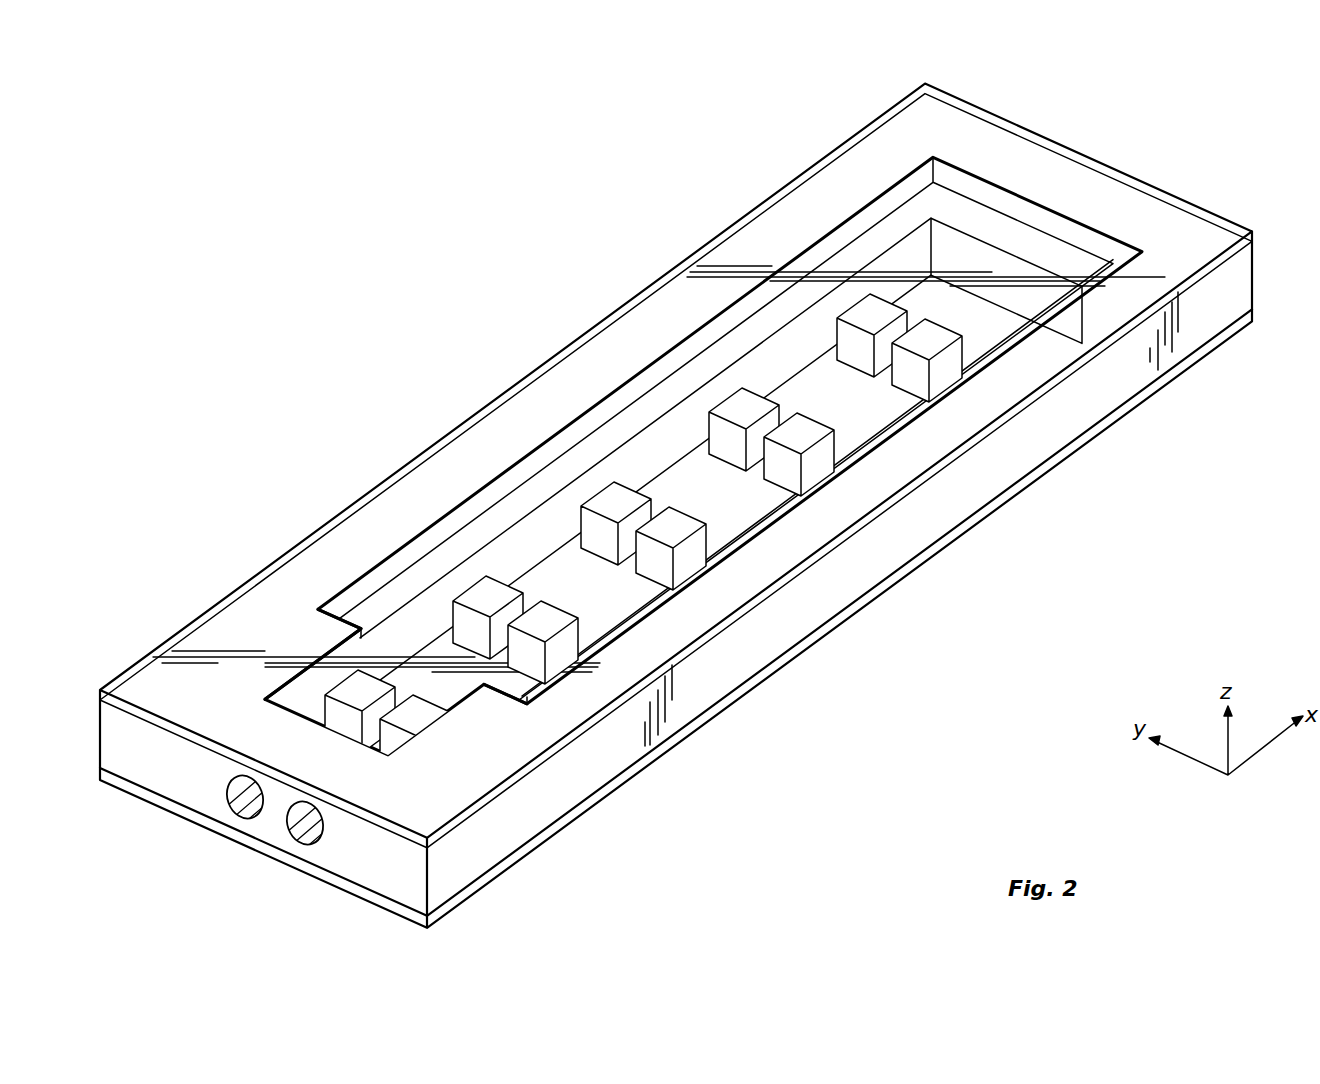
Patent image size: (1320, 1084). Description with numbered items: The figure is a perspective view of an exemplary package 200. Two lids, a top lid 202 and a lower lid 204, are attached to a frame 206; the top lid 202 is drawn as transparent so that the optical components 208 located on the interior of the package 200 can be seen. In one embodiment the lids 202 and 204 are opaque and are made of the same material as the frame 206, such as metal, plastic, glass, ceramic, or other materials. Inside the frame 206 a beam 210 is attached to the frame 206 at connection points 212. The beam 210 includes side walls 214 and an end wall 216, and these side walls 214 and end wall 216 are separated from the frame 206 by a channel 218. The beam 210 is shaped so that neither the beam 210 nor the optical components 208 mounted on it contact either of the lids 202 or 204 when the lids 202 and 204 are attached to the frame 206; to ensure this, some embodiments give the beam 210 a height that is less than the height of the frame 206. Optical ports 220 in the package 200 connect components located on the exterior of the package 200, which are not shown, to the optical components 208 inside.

The package 200 is at (343, 313).
The top lid 202 is at (222, 652).
The lid 204 is at (535, 845).
The frame 206 is at (1100, 187).
The optical components 208 is at (555, 623).
The beam 210 is at (868, 436).
The connection points 212 is at (340, 612).
The side walls 214 is at (715, 360).
The end wall 216 is at (983, 257).
The channel 218 is at (832, 247).
The optical ports 220 is at (298, 820).